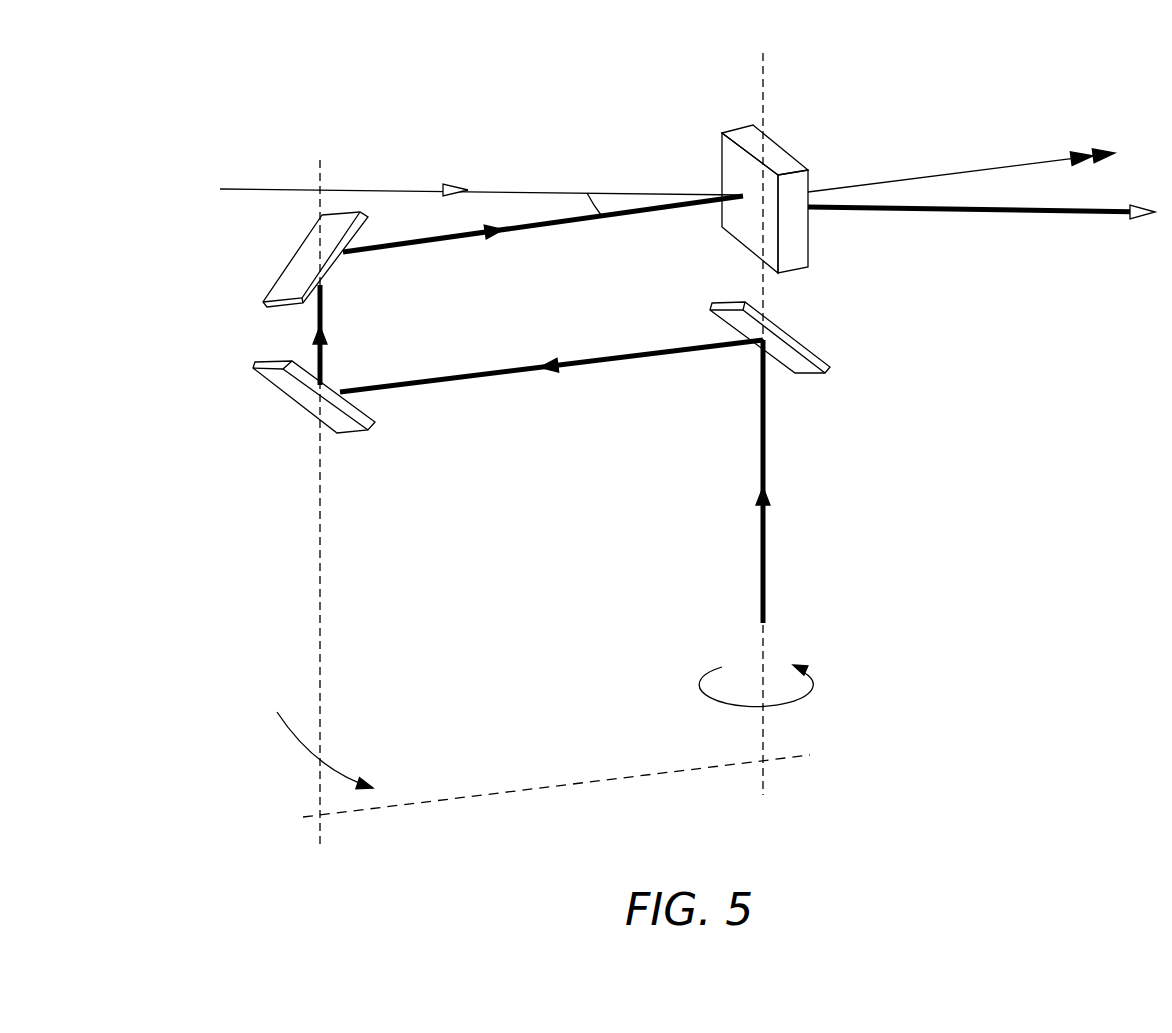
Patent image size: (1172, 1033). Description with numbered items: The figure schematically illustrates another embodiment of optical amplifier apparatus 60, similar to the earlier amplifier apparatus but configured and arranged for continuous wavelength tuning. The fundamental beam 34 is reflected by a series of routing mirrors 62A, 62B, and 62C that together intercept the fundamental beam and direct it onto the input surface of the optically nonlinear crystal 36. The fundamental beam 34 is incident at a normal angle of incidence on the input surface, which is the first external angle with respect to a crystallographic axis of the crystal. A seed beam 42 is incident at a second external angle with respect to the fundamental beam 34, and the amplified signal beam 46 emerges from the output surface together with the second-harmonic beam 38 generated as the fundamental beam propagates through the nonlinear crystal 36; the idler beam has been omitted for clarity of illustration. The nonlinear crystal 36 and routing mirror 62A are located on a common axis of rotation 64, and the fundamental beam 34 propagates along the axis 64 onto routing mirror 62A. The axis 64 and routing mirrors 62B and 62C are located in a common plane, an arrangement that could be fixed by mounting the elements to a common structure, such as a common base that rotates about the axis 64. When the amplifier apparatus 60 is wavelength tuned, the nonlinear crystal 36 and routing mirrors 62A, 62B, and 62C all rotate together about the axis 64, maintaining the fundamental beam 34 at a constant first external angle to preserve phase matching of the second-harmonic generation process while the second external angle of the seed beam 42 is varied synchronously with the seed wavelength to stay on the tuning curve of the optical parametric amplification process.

The optical amplifier apparatus 60 is at (233, 120).
The axis of rotation 64 is at (763, 77).
The seed beam 42 is at (481, 173).
The fundamental beam 34 is at (562, 409).
The optically nonlinear crystal 36 is at (768, 236).
The second-harmonic beam 38 is at (961, 159).
The signal beam 46 is at (981, 226).
The routing mirror 62A is at (776, 337).
The routing mirror 62B is at (311, 397).
The routing mirror 62C is at (304, 259).